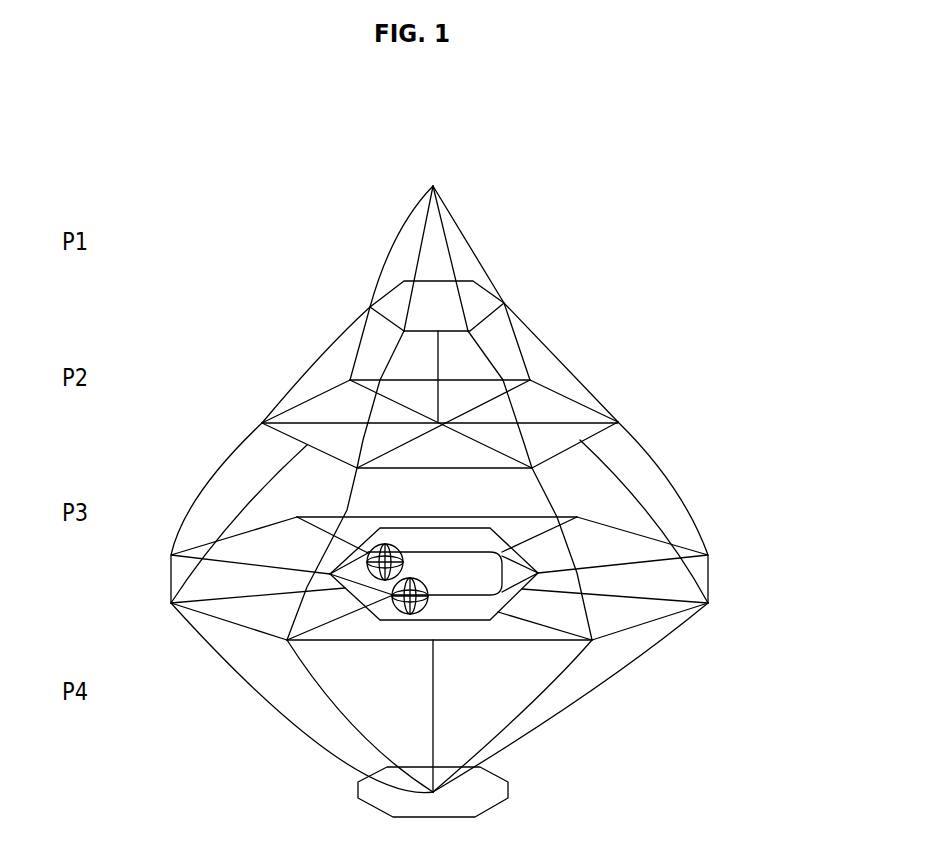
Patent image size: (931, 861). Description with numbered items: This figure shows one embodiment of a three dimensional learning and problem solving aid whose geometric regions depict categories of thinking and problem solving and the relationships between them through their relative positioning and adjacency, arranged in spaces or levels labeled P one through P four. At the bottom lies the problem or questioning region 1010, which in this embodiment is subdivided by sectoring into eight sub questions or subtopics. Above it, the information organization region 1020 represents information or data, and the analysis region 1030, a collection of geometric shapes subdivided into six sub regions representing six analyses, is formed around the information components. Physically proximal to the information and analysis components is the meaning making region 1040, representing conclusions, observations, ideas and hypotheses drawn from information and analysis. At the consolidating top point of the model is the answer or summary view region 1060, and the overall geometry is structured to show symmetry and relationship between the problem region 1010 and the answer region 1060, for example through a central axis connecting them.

The problem or questioning region 1010 is at (710, 792).
The information organization region 1020 is at (486, 581).
The analysis region 1030 is at (717, 428).
The meaning making region 1040 is at (620, 304).
The answer or summary view region 1060 is at (508, 301).